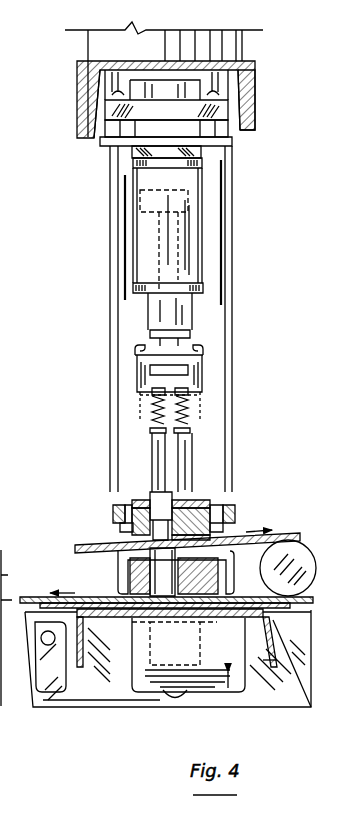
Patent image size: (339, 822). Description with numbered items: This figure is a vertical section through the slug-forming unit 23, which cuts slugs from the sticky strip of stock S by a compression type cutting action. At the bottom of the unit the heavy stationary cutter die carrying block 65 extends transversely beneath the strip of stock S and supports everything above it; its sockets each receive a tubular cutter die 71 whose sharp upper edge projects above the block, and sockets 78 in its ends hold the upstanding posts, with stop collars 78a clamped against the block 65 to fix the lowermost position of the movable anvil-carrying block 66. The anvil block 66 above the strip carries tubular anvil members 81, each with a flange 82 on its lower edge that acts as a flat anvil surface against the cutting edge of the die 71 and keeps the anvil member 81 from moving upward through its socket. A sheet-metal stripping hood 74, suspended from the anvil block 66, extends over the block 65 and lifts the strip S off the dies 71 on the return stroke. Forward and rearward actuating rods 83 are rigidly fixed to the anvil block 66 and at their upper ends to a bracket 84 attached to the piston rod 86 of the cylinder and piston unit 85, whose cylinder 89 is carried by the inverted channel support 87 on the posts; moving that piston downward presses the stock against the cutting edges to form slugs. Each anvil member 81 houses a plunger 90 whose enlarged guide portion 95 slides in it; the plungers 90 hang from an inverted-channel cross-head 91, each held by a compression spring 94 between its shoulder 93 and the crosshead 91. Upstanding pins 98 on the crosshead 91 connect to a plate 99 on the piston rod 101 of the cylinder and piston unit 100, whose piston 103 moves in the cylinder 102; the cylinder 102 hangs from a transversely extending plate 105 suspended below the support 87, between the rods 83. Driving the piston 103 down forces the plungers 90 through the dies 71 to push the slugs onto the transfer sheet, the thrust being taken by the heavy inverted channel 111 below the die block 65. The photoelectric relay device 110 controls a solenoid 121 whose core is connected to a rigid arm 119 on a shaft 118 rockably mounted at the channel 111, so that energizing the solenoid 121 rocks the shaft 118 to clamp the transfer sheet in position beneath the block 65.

The cylinder 89 is at (240, 42).
The cylinder and piston unit 85 is at (118, 42).
The inverted channel support 87 is at (256, 110).
The bracket 84 is at (112, 128).
The piston rod 86 is at (168, 92).
The transversely extending plate 105 is at (118, 148).
The cylinder 102 is at (188, 178).
The piston 103 is at (140, 203).
The cylinder and piston unit 100 is at (160, 253).
The piston rod 101 is at (160, 302).
The plate 99 is at (178, 357).
The upstanding pins 98 is at (200, 366).
The actuating rods 83 is at (228, 390).
The cross-head 91 is at (138, 398).
The compression spring 94 is at (150, 424).
The shoulder 93 is at (155, 428).
The plunger 90 is at (158, 456).
The anvil member 81 is at (150, 506).
The enlarged guide portion 95 is at (157, 500).
The slug-forming unit 23 is at (240, 500).
The anvil-carrying block 66 is at (236, 513).
The flange 82 is at (158, 541).
The strip of stock S is at (295, 537).
The stop collars 78a is at (17, 615).
The sockets 78 is at (0, 572).
The stripping hood 74 is at (118, 570).
The tubular cutter die 71 is at (152, 568).
The cutter die carrying block 65 is at (133, 597).
The rigid arm 119 is at (108, 697).
The shaft 118 is at (47, 647).
The solenoid 121 is at (200, 648).
The photoelectric relay device 110 is at (227, 688).
The inverted channel 111 is at (277, 672).